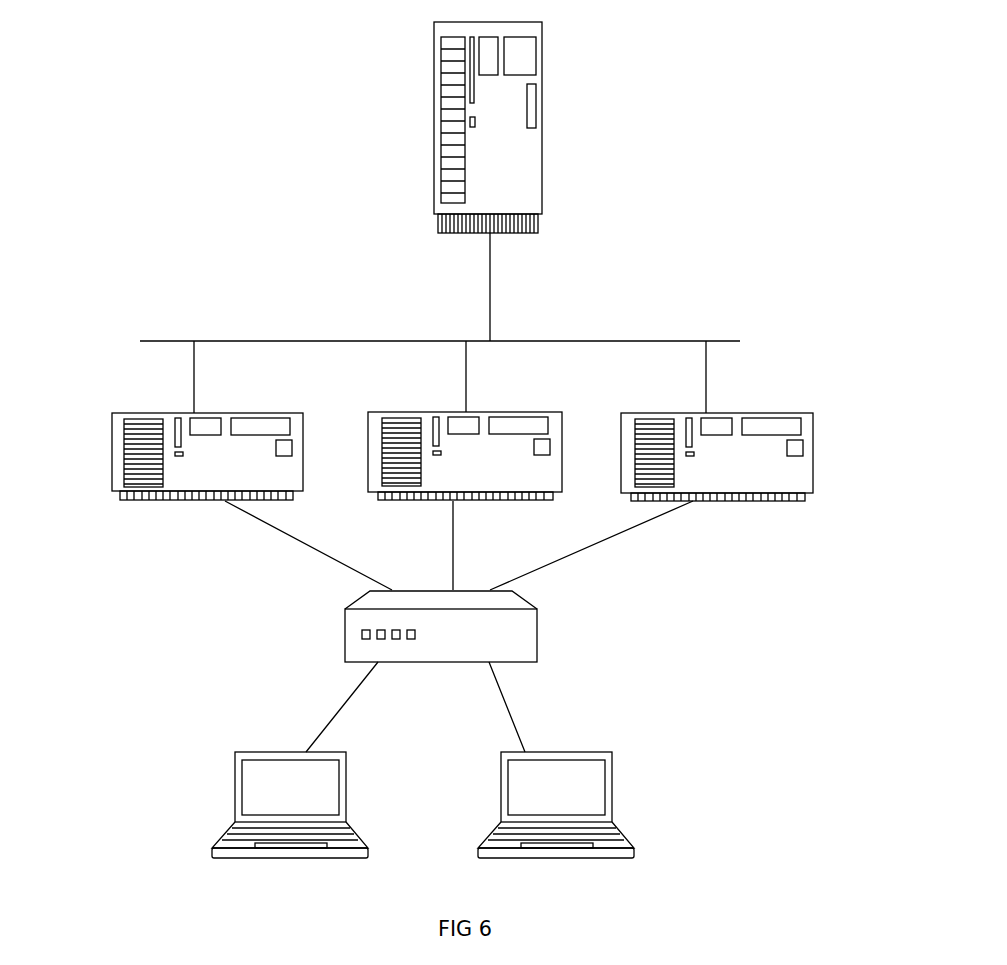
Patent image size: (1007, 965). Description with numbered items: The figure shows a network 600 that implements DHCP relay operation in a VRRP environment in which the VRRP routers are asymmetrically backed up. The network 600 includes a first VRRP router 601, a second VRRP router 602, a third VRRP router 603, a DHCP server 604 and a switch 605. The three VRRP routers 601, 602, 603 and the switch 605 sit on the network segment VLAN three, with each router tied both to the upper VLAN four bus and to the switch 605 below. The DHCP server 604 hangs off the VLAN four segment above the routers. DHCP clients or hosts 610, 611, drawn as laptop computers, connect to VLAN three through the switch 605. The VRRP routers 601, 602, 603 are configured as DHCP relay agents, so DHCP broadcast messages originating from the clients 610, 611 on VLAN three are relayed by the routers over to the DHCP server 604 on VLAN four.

The network 600 is at (756, 683).
The first VRRP router 601 is at (110, 443).
The second VRRP router 602 is at (490, 412).
The third VRRP router 603 is at (778, 413).
The DHCP server 604 is at (542, 79).
The switch 605 is at (537, 630).
The DHCP client 610 is at (346, 777).
The DHCP client 611 is at (610, 783).